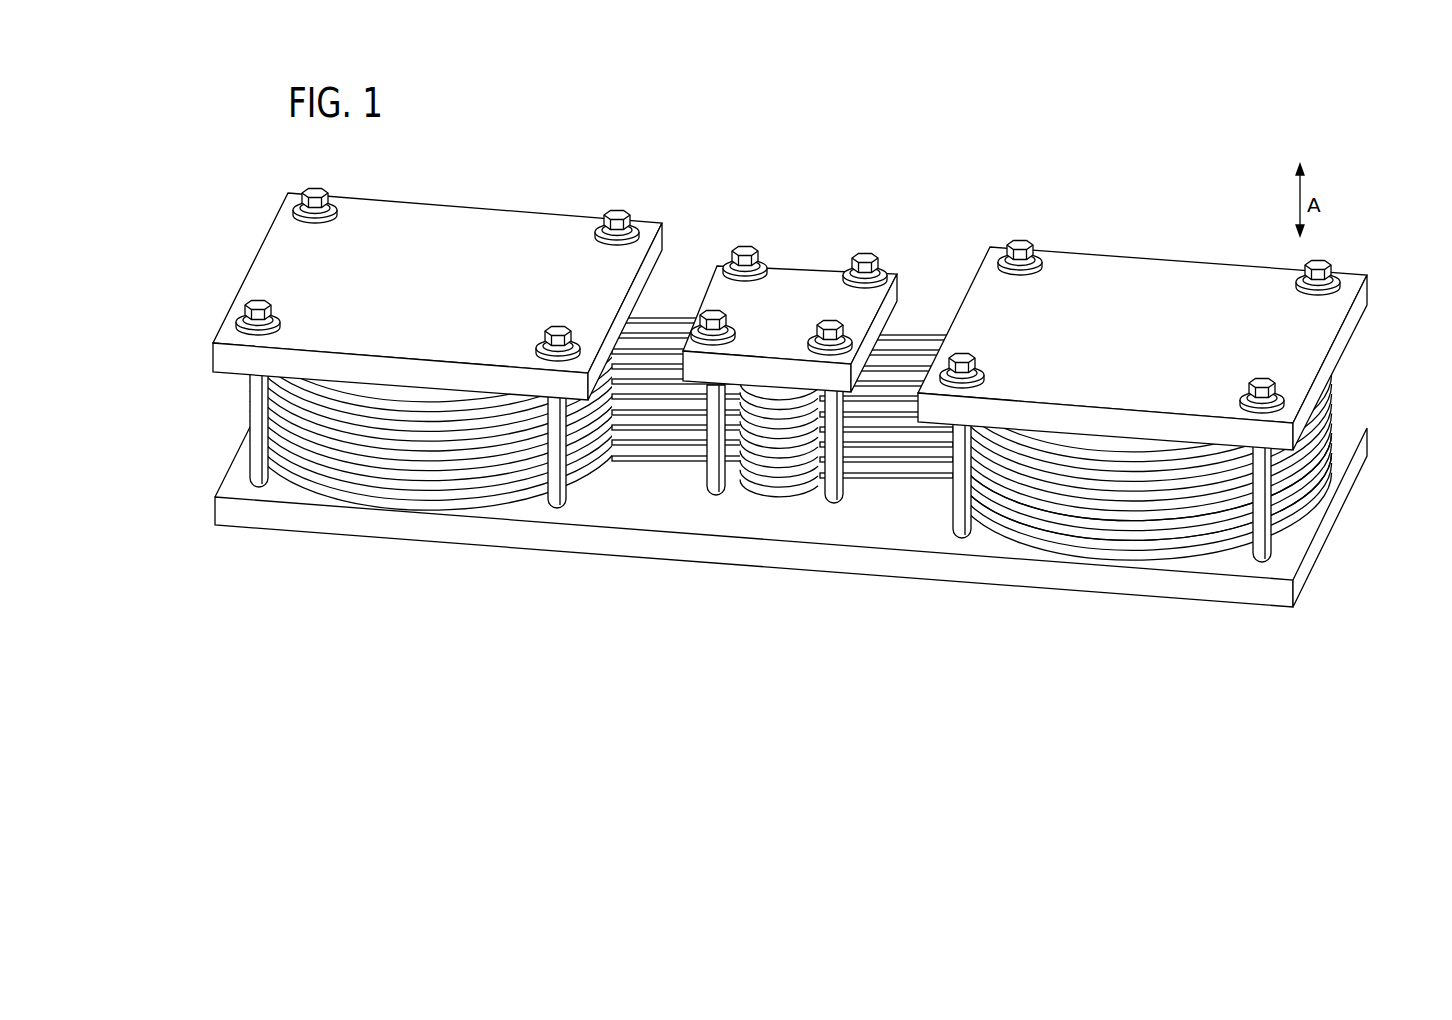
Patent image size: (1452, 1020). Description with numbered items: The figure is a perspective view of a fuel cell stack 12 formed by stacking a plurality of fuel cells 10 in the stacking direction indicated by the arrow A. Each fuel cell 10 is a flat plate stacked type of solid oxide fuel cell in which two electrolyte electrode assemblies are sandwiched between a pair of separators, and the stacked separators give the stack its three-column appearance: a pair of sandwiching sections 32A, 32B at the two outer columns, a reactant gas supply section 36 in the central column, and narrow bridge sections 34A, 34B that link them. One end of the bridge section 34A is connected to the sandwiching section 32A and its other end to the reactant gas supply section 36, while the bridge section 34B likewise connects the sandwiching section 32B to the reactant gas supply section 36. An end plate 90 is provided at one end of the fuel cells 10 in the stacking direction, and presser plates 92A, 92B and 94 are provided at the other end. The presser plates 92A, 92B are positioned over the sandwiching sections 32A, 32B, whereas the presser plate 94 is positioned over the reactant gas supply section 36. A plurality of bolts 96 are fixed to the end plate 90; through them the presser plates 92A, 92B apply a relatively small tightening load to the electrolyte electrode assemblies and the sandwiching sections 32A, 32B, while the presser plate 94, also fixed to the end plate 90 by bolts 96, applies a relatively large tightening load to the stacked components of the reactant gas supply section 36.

The fuel cell 10 is at (1015, 515).
The fuel cell stack 12 is at (1103, 192).
The sandwiching section 32A is at (1095, 540).
The sandwiching section 32B is at (392, 492).
The bridge section 34A is at (905, 463).
The bridge section 34B is at (653, 462).
The reactant gas supply section 36 is at (780, 496).
The end plate 90 is at (917, 555).
The presser plate 92A is at (1159, 275).
The presser plate 92B is at (465, 230).
The presser plate 94 is at (796, 275).
The bolt 96 is at (556, 508).